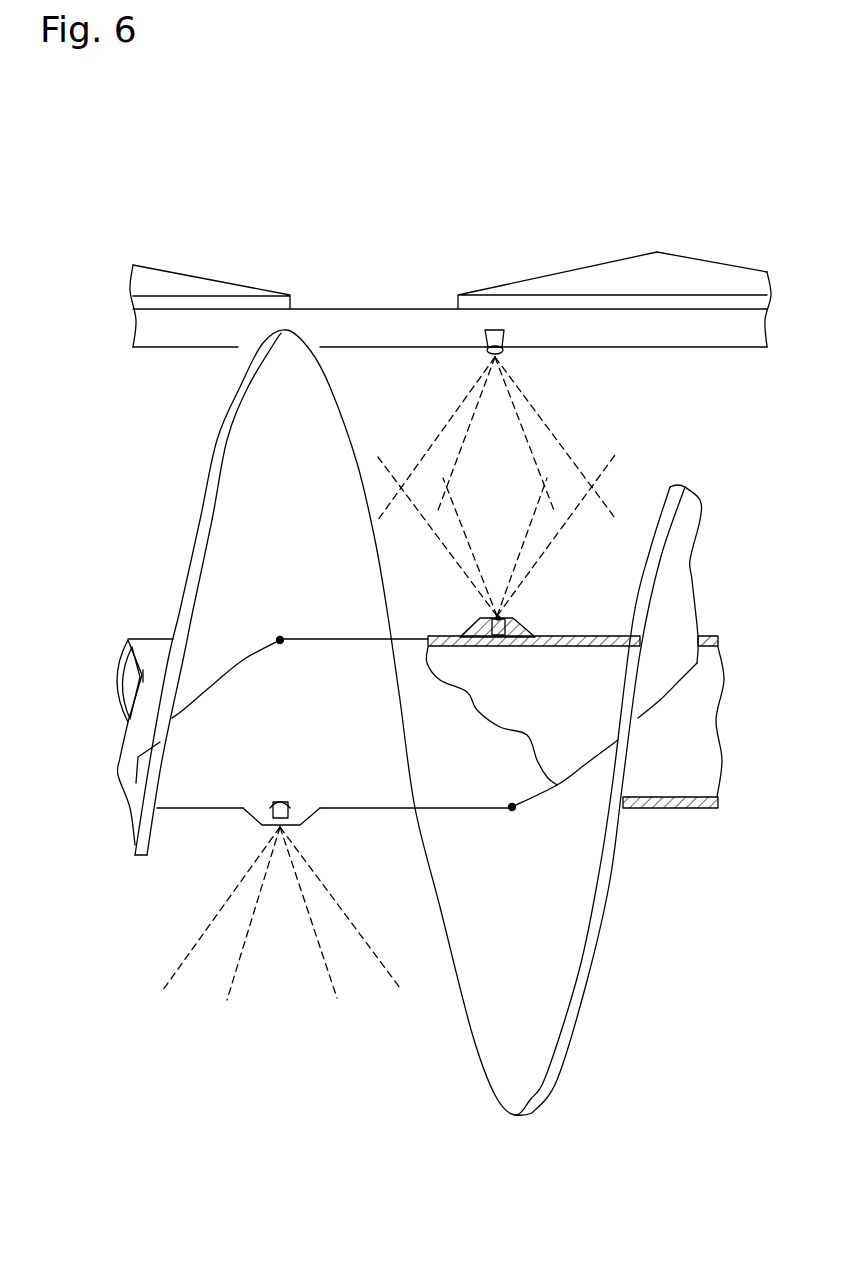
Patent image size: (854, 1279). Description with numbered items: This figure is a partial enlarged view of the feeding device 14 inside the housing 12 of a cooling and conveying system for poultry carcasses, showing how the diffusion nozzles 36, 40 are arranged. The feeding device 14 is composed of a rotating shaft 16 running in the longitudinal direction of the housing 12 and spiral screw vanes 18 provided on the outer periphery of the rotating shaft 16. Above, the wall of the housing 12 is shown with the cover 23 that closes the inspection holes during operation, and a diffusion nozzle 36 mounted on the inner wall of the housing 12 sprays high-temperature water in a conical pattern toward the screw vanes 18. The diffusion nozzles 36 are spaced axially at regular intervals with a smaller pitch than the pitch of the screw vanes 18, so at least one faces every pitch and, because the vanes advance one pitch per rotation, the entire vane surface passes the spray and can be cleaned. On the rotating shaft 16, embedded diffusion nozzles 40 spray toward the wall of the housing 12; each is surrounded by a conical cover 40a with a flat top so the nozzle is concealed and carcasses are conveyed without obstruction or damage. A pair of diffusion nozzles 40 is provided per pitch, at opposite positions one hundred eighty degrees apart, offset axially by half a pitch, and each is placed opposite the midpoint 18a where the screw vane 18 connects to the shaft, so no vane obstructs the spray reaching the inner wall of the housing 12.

The housing 12 is at (355, 309).
The cover 23 is at (566, 272).
The diffusion nozzle 36 is at (495, 328).
The feeding device 14 is at (93, 464).
The rotating shaft 16 is at (158, 638).
The screw vanes 18 is at (207, 467).
The midpoint 18a is at (280, 637).
The diffusion nozzle 40 is at (497, 616).
The conical cover 40a is at (528, 623).